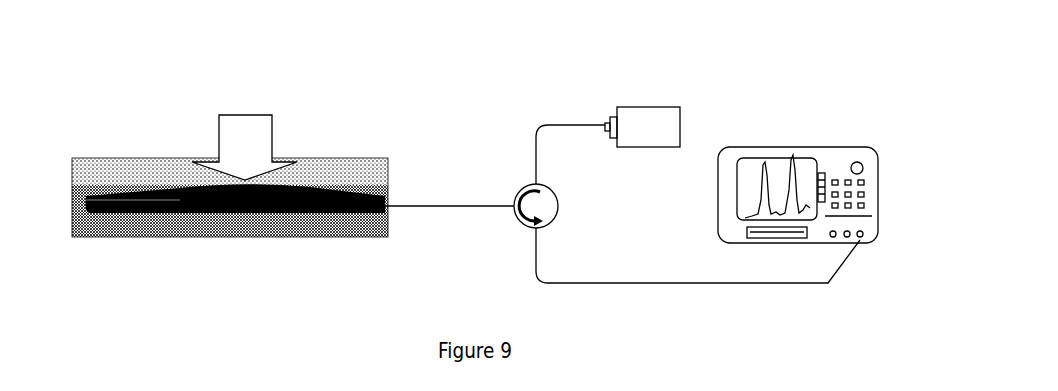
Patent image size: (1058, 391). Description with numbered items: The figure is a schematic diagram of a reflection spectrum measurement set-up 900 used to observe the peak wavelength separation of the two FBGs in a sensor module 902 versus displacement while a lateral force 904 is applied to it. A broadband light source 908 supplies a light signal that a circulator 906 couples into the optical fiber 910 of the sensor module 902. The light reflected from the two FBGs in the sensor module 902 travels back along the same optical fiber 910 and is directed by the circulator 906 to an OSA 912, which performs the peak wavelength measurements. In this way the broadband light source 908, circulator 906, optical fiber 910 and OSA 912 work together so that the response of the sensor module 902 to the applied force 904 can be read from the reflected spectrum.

The reflection spectrum measurement set-up 900 is at (338, 302).
The sensor module 902 is at (185, 237).
The lateral force 904 is at (272, 135).
The circulator 906 is at (558, 201).
The broadband light source 908 is at (680, 119).
The optical fiber 910 is at (423, 202).
The OSA 912 is at (875, 202).